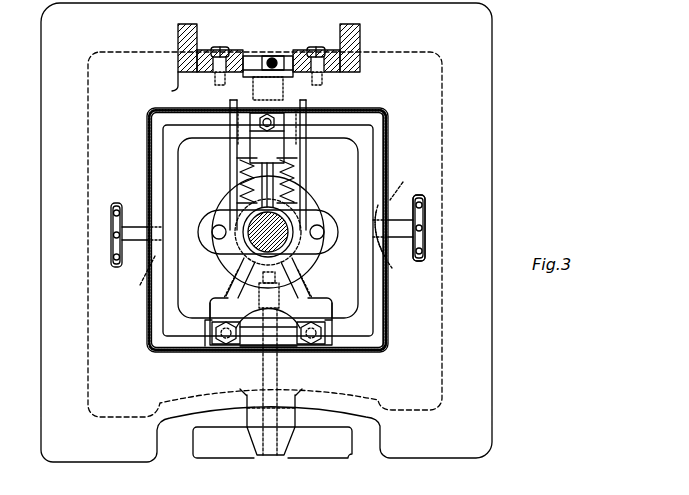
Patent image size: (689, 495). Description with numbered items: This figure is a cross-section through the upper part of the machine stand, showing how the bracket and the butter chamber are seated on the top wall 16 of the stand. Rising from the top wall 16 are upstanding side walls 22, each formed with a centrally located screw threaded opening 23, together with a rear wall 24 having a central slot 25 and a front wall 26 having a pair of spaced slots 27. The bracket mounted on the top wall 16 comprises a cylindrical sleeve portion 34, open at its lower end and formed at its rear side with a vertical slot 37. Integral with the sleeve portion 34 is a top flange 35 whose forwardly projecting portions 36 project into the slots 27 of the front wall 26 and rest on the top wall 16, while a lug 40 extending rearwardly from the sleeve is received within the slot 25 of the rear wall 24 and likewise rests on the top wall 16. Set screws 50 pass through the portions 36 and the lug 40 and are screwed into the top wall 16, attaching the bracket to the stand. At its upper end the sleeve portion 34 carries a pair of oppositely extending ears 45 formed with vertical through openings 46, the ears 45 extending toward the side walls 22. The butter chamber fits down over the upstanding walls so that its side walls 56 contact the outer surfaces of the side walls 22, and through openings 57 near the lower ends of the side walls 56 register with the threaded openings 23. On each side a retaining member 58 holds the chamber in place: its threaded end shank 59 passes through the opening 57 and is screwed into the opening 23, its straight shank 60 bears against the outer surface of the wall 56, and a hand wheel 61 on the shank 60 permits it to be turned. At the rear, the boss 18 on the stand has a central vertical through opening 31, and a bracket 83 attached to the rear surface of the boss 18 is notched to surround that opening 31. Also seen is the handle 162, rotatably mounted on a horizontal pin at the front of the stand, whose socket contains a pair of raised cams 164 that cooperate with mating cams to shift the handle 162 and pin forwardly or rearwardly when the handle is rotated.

The top wall 16 is at (368, 256).
The boss 18 is at (368, 82).
The upstanding side walls 22 is at (158, 150).
The screw threaded openings 23 is at (270, 239).
The rear wall 24 is at (331, 115).
The central slot 25 is at (246, 126).
The front wall 26 is at (180, 347).
The spaced slots 27 is at (206, 346).
The central vertical through opening 31 is at (338, 48).
The cylindrical sleeve portion 34 is at (285, 214).
The top flange 35 is at (327, 298).
The forwardly projecting portions 36 is at (192, 325).
The vertical slot 37 is at (276, 208).
The lug 40 is at (282, 116).
The ears 45 is at (322, 226).
The vertical through openings 46 is at (325, 232).
The set screws 50 is at (313, 112).
The side walls 56 is at (390, 309).
The through openings 57 is at (444, 173).
The retaining member 58 is at (439, 227).
The threaded end shank 59 is at (392, 263).
The straight shank 60 is at (133, 225).
The hand wheel 61 is at (110, 230).
The bracket 83 is at (173, 19).
The handle 162 is at (228, 446).
The raised cams 164 is at (290, 415).